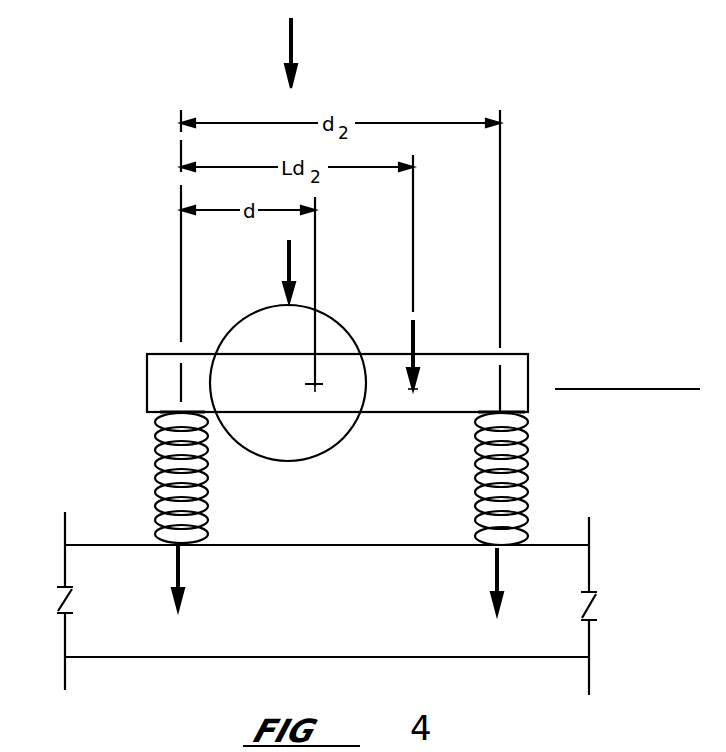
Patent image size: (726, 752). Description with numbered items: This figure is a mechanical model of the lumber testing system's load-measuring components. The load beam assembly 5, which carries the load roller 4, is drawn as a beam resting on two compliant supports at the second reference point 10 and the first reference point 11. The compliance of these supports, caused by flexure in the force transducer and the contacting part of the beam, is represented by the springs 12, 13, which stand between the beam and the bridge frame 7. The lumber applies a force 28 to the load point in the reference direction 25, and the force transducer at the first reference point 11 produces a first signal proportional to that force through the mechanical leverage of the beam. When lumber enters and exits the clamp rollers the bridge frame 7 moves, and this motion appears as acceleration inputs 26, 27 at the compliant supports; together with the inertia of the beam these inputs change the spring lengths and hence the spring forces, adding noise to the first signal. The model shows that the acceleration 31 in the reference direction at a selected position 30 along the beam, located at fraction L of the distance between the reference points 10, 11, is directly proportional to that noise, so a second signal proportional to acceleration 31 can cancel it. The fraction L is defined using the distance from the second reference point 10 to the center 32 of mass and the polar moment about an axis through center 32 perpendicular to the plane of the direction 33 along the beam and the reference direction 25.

The load roller 4 is at (252, 312).
The load beam assembly 5 is at (163, 352).
The bridge frame 7 is at (277, 659).
The second reference point 10 is at (180, 412).
The first reference point 11 is at (505, 412).
The spring 12 is at (475, 491).
The spring 13 is at (211, 492).
The reference direction 25 is at (293, 42).
The acceleration input 26 is at (493, 580).
The acceleration input 27 is at (182, 578).
The force 28 is at (285, 262).
The selected position 30 is at (418, 388).
The acceleration 31 is at (417, 333).
The center of mass 32 is at (308, 386).
The direction along the load beam assembly 33 is at (634, 389).